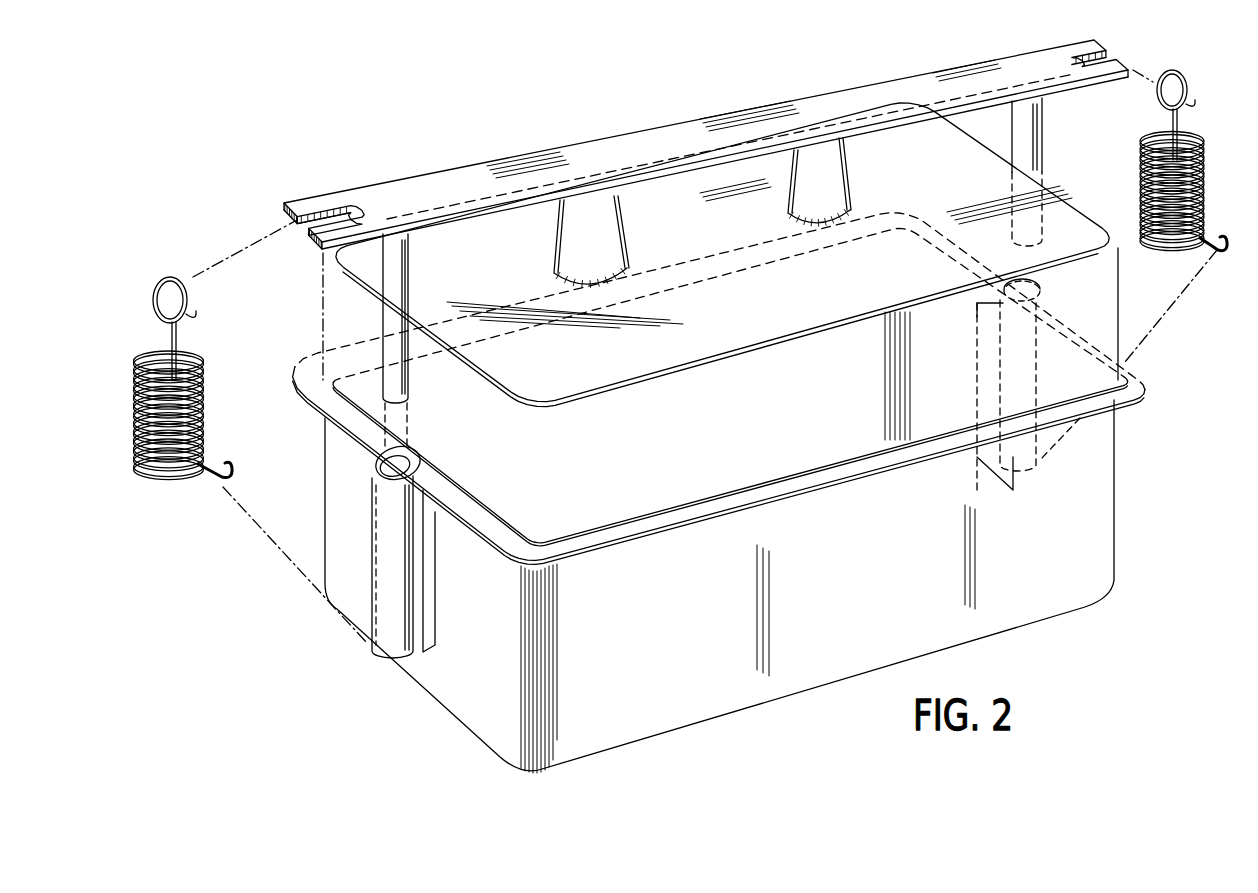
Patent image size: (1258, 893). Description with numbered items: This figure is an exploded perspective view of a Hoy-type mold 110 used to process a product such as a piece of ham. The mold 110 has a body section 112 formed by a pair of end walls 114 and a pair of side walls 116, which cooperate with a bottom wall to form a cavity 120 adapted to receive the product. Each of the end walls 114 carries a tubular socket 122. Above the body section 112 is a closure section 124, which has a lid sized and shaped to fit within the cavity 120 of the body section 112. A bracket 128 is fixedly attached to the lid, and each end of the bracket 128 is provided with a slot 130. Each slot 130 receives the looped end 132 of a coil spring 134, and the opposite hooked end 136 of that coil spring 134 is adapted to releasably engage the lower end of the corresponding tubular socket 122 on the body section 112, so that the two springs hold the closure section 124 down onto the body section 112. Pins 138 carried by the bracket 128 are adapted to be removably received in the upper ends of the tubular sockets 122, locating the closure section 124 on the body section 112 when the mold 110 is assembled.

The Hoy-type mold 110 is at (416, 162).
The body section 112 is at (451, 679).
The end walls 114 is at (955, 363).
The side walls 116 is at (757, 413).
The cavity 120 is at (583, 514).
The tubular socket 122 is at (378, 474).
The closure section 124 is at (606, 135).
The bracket 128 is at (866, 92).
The slot 130 is at (314, 232).
The looped end 132 is at (168, 277).
The coil spring 134 is at (206, 388).
The hooked end 136 is at (212, 482).
The pins 138 is at (409, 372).